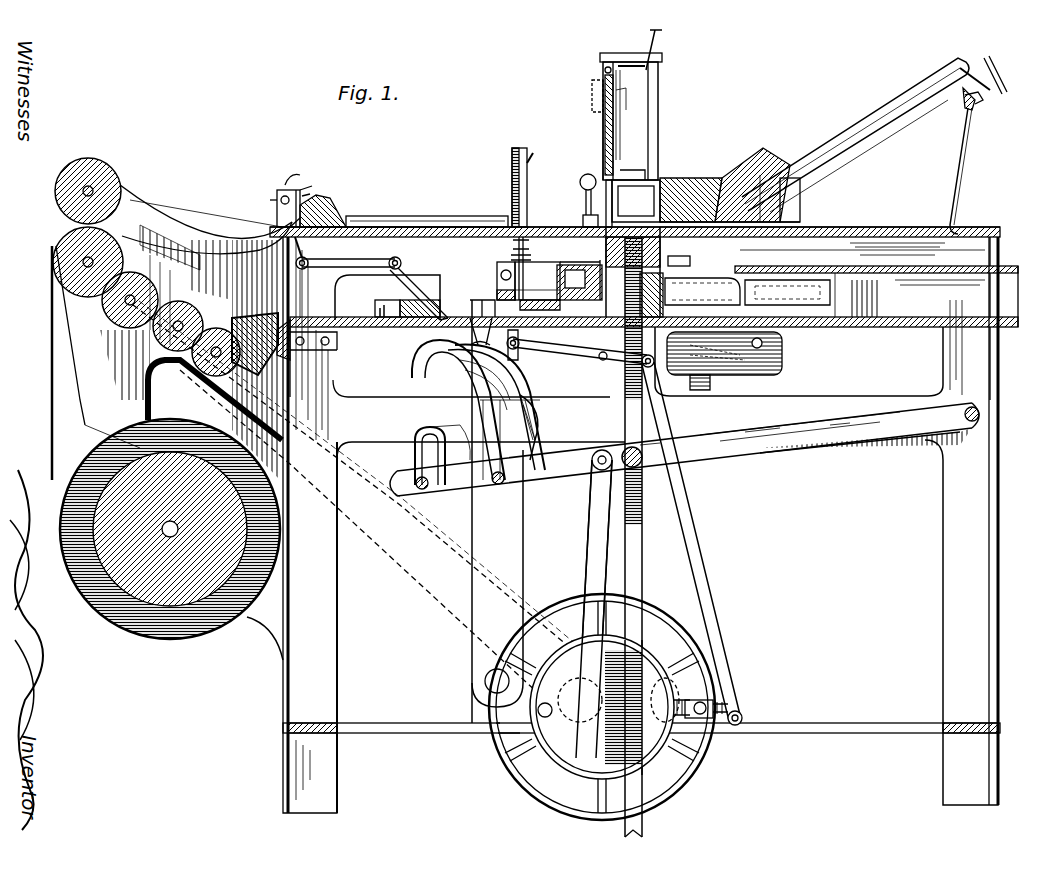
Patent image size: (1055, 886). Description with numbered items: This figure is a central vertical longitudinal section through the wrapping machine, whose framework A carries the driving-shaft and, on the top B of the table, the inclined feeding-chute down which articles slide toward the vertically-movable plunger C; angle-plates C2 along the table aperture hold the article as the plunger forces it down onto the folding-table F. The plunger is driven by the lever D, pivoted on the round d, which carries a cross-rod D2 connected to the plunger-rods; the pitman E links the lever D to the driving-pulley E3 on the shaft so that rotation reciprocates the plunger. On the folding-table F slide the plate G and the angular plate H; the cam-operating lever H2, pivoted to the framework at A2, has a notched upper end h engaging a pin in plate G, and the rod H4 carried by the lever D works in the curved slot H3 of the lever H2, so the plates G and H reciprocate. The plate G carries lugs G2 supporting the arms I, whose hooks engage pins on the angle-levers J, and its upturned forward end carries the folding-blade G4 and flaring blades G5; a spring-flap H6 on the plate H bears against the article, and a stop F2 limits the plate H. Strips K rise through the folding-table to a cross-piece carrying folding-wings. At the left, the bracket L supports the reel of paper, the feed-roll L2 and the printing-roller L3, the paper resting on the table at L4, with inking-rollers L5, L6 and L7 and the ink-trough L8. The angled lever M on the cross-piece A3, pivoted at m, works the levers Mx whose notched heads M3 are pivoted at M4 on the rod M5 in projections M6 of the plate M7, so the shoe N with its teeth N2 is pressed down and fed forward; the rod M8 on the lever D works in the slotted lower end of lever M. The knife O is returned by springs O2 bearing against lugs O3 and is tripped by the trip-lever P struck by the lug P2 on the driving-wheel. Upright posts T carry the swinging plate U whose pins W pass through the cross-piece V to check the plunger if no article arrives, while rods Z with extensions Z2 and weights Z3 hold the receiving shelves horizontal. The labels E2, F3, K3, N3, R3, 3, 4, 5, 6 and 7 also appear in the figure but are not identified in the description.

The framework A is at (335, 660).
The framework pivot portion A2 is at (484, 686).
The cross-piece A3 is at (322, 406).
The table top B is at (880, 226).
The plunger C is at (665, 190).
The angle-plate C2 is at (675, 215).
The lever D is at (783, 440).
The cross-rod D2 is at (644, 470).
The round d is at (982, 414).
The pitman E is at (590, 547).
The crank disk E2 is at (553, 697).
The driving-pulley E3 is at (506, 760).
The folding-table F is at (799, 361).
The stop F2 is at (372, 318).
The connecting rod F3 is at (700, 536).
The sliding plate G is at (495, 300).
The lugs G2 is at (500, 275).
The folding-blade G4 is at (578, 272).
The flaring folding-blades G5 is at (572, 249).
The notched portion h is at (470, 318).
The sliding angular plate H is at (580, 341).
The cam-operating lever H2 is at (414, 352).
The curved elongated slot H3 is at (448, 366).
The rod H4 is at (497, 492).
The spring-flap H6 is at (651, 349).
The arms I is at (553, 282).
The angle-levers J is at (783, 370).
The strips K is at (712, 383).
The stop lug K3 is at (685, 255).
The bracket L is at (166, 360).
The feed-roll L2 is at (88, 158).
The printing-roller L3 is at (52, 256).
The paper on table L4 is at (276, 243).
The inking-roller L5 is at (122, 328).
The inking-roller L6 is at (168, 365).
The inking-roller L7 is at (257, 362).
The ink-trough L8 is at (292, 352).
The angled lever M is at (452, 428).
The notched heads M3 is at (290, 195).
The head pivots M4 is at (330, 274).
The rod M5 is at (312, 188).
The vertical projections M6 is at (306, 198).
The plate M7 is at (322, 212).
The rod M8 is at (425, 496).
The levers Mx is at (300, 248).
The pivot m is at (536, 416).
The shoe N is at (340, 227).
The teeth N2 is at (275, 211).
The feed pin N3 is at (302, 195).
The knife O is at (528, 170).
The springs O2 is at (531, 259).
The lugs O3 is at (528, 228).
The trip-lever P is at (742, 688).
The lug P2 is at (560, 765).
The slide bed R3 is at (876, 318).
The upright posts T is at (630, 144).
The swinging plate U is at (603, 122).
The cross-piece V is at (635, 70).
The pin W is at (630, 92).
The rods Z is at (634, 248).
The extensions Z2 is at (582, 200).
The weights Z3 is at (584, 175).
The arm 3 is at (972, 170).
The chute 4 is at (908, 110).
The hook 5 is at (990, 106).
The cross pin 6 is at (998, 88).
The hopper wall 7 is at (777, 198).